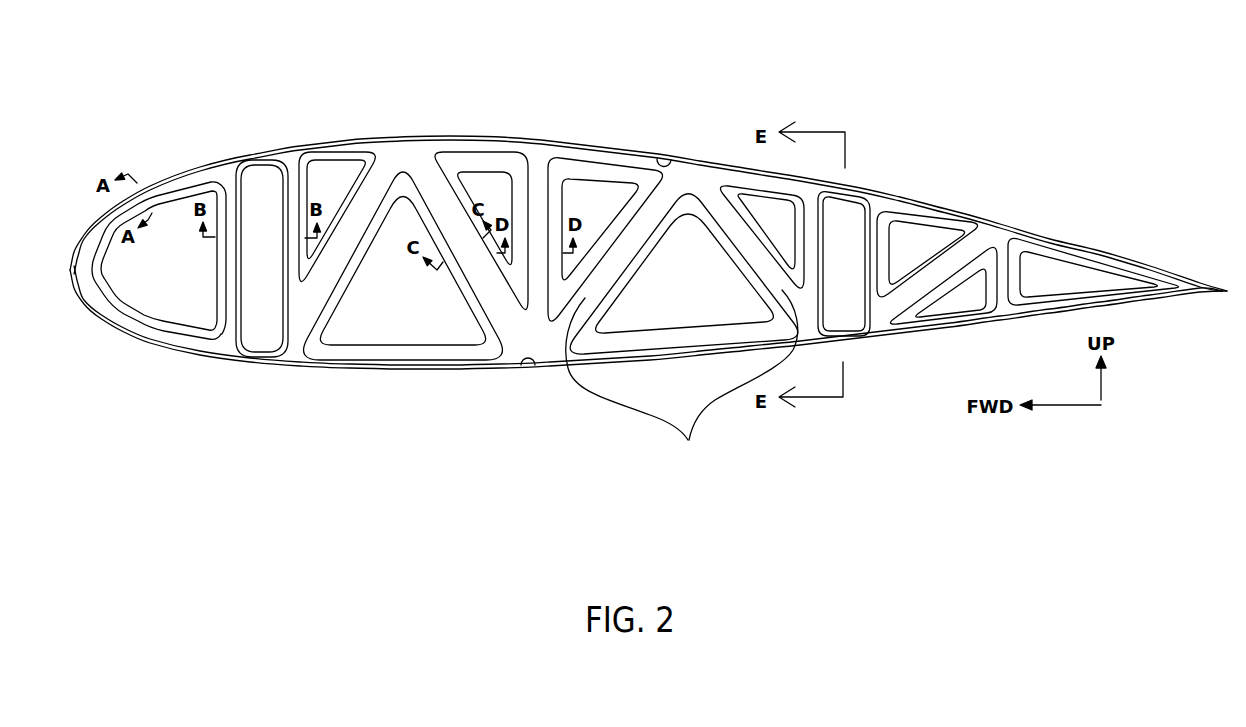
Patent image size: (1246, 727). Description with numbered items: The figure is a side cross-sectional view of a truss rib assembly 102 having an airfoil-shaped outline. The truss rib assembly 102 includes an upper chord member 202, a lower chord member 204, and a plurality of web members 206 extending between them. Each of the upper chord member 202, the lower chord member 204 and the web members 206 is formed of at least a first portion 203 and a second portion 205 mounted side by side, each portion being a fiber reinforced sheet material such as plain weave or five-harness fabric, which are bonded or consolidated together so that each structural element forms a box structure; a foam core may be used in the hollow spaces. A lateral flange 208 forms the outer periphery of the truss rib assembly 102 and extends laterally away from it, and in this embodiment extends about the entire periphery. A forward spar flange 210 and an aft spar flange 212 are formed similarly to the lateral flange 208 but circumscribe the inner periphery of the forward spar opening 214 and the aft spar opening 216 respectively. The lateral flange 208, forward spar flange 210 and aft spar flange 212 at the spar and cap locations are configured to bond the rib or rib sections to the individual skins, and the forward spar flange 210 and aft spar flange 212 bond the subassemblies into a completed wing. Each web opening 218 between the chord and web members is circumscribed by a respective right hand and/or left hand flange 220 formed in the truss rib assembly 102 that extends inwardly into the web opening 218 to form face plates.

The truss rib assembly 102 is at (669, 95).
The upper chord member 202 is at (653, 155).
The first portion 203 is at (290, 160).
The lower chord member 204 is at (519, 369).
The second portion 205 is at (332, 137).
The web members 206 is at (903, 307).
The lateral flange 208 is at (497, 137).
The forward spar flange 210 is at (262, 358).
The aft spar flange 212 is at (862, 337).
The forward spar opening 214 is at (244, 277).
The aft spar opening 216 is at (827, 280).
The web opening 218 is at (150, 278).
The flange 220 is at (372, 160).